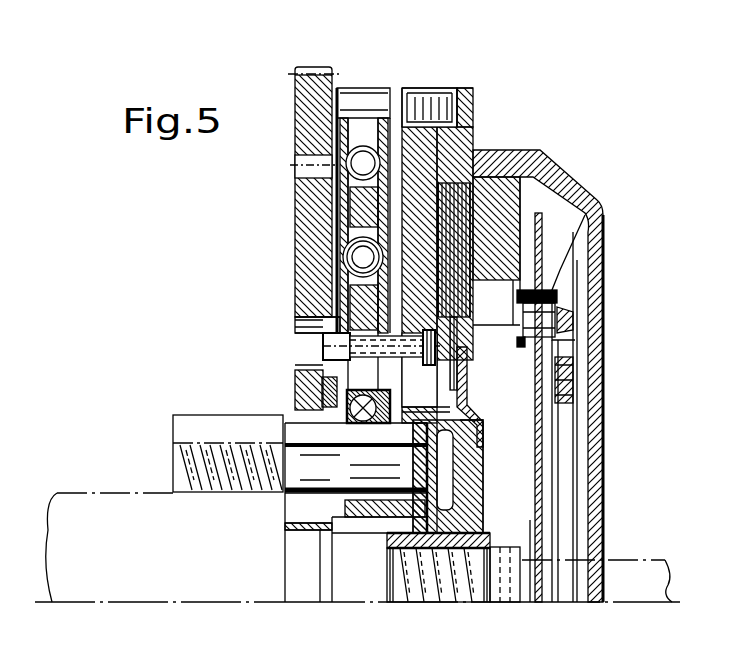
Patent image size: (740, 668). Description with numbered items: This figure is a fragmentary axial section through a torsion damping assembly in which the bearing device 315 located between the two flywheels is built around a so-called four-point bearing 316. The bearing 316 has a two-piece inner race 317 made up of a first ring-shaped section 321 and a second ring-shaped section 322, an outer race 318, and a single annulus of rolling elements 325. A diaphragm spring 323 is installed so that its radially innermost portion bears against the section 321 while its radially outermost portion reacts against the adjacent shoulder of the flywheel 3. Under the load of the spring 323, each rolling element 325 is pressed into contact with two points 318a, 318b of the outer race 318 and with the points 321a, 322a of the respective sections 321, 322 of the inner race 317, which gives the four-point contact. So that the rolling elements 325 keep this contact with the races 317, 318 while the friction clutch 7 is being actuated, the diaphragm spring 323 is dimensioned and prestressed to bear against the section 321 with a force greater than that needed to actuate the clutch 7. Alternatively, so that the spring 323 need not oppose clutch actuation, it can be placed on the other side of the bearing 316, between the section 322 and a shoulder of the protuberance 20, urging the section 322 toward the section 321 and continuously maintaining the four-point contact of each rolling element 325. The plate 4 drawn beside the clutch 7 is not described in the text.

The flywheel 3 is at (303, 387).
The friction clutch 7 is at (556, 146).
The plate 4 is at (473, 277).
The protuberance 20 is at (380, 507).
The bearing device 315 is at (370, 455).
The four-point bearing 316 is at (480, 437).
The inner race 317 is at (189, 511).
The outer race 318 is at (327, 343).
The contact point of outer race 318a is at (327, 377).
The contact point of outer race 318b is at (405, 392).
The first ring-shaped section 321 is at (335, 455).
The contact point of first section 321a is at (345, 405).
The second ring-shaped section 322 is at (350, 470).
The contact point of second section 322a is at (465, 458).
The diaphragm spring 323 is at (287, 427).
The rolling elements 325 is at (460, 400).